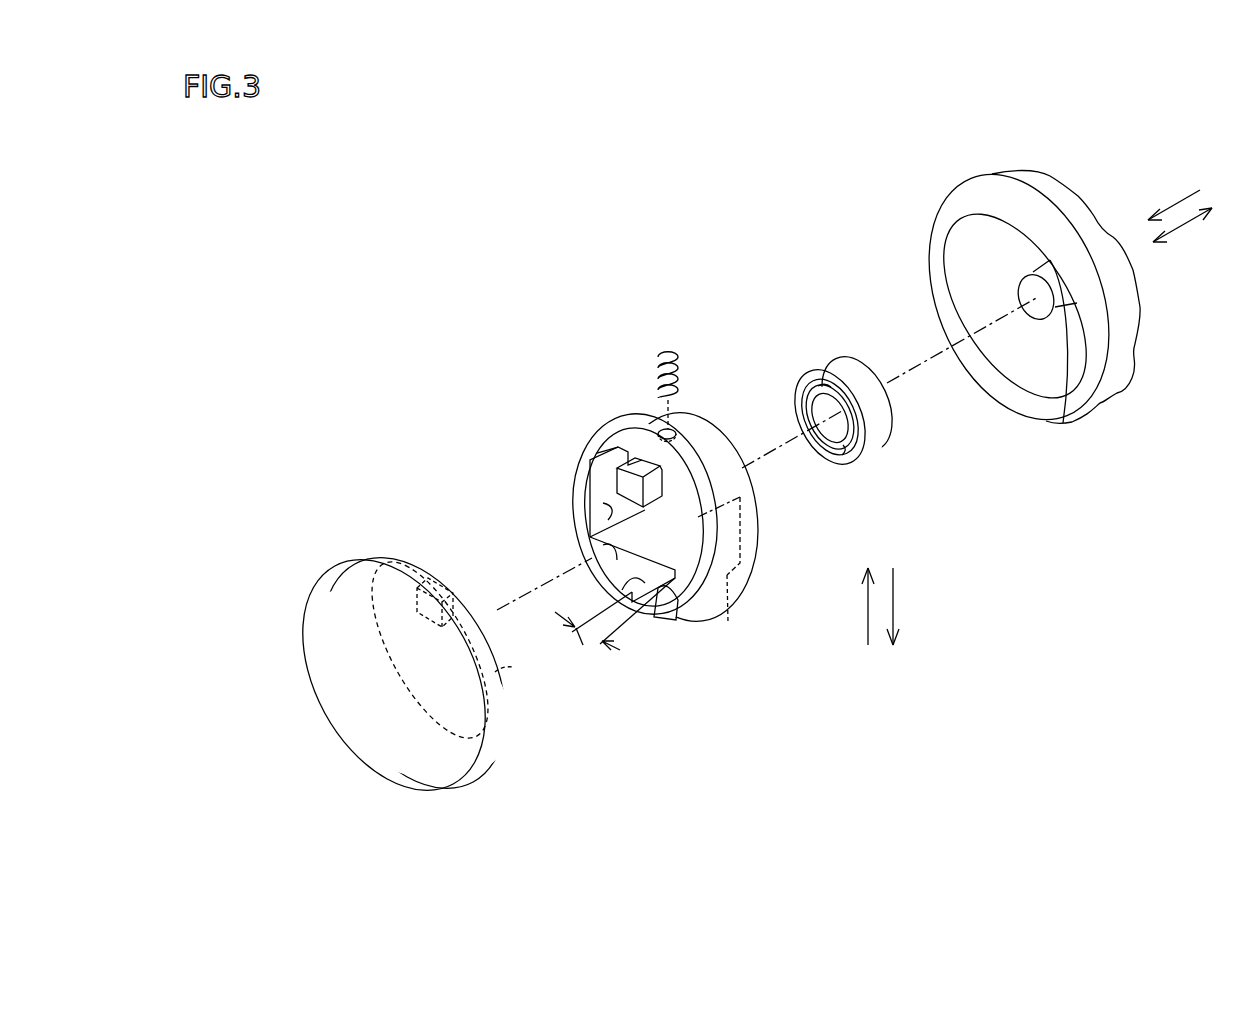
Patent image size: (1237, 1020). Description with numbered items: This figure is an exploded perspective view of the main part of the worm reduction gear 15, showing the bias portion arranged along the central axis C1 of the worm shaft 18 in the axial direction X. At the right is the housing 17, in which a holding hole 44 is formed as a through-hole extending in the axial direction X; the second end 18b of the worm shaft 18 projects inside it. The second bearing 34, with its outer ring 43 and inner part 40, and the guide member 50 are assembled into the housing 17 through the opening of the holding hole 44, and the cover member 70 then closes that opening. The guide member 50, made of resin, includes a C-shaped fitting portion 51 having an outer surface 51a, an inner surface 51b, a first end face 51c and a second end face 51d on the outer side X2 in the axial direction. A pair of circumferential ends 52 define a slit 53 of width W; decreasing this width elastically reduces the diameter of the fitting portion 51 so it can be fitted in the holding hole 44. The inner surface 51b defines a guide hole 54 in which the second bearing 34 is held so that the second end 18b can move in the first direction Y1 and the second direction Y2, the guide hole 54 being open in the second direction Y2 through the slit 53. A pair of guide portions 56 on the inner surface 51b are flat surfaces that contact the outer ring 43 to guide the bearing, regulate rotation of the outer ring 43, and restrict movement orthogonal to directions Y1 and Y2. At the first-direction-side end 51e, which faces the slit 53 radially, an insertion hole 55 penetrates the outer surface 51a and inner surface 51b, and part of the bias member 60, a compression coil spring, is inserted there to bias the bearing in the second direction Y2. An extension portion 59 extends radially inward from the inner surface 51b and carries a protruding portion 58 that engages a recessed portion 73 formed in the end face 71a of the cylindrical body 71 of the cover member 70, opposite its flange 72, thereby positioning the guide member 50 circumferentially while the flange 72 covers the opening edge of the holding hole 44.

The operating device 15 is at (752, 300).
The housing 17 is at (1019, 300).
The worm shaft 18 is at (1035, 268).
The second end of the worm shaft 18b is at (1063, 423).
The second bearing 34 is at (863, 413).
The bearing inner member 40 is at (843, 444).
The outer ring 43 is at (841, 368).
The holding hole 44 is at (1040, 374).
The guide member 50 is at (666, 506).
The fitting portion 51 is at (666, 542).
The outer surface 51a is at (625, 418).
The inner surface 51b is at (612, 550).
The first end face 51c is at (758, 528).
The second end face 51d is at (581, 487).
The first-direction-side end 51e is at (678, 432).
The circumferential ends 52 is at (627, 587).
The slit 53 is at (645, 607).
The guide hole 54 is at (675, 530).
The insertion hole 55 is at (656, 383).
The guide portions 56 is at (604, 504).
The protruding portion 58 is at (626, 485).
The extension portion 59 is at (603, 450).
The bias member 60 is at (658, 357).
The cover member 70 is at (416, 666).
The body 71 is at (413, 562).
The end face 71a is at (512, 672).
The flange 72 is at (362, 563).
The recessed portion 73 is at (443, 584).
The central axis C1 is at (913, 372).
The width of the slit W is at (587, 645).
The axial direction X is at (1183, 232).
The outer side in the axial direction X2 is at (1176, 200).
The first direction Y1 is at (866, 605).
The second direction Y2 is at (895, 605).